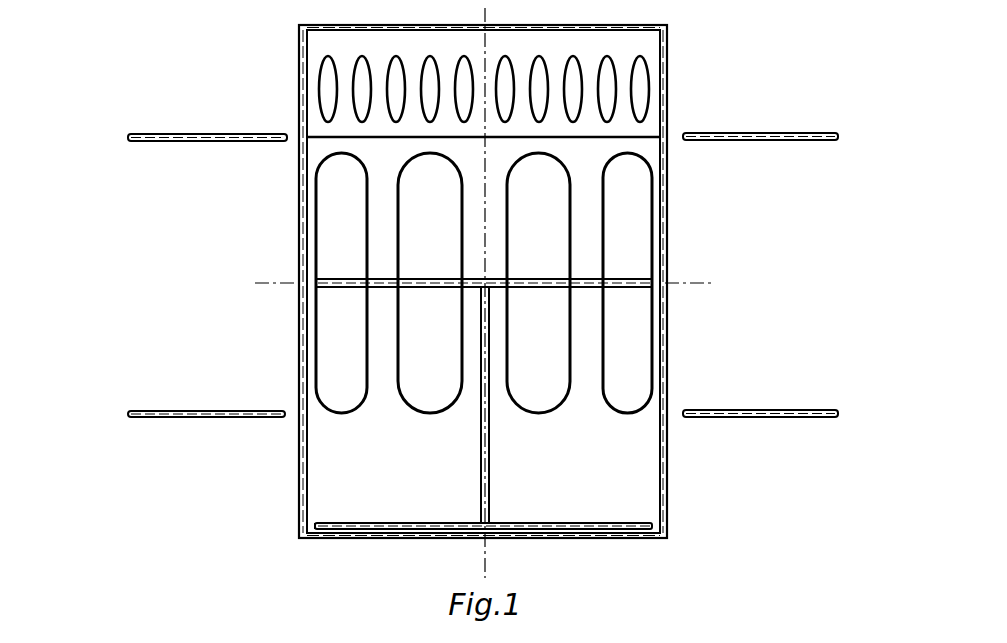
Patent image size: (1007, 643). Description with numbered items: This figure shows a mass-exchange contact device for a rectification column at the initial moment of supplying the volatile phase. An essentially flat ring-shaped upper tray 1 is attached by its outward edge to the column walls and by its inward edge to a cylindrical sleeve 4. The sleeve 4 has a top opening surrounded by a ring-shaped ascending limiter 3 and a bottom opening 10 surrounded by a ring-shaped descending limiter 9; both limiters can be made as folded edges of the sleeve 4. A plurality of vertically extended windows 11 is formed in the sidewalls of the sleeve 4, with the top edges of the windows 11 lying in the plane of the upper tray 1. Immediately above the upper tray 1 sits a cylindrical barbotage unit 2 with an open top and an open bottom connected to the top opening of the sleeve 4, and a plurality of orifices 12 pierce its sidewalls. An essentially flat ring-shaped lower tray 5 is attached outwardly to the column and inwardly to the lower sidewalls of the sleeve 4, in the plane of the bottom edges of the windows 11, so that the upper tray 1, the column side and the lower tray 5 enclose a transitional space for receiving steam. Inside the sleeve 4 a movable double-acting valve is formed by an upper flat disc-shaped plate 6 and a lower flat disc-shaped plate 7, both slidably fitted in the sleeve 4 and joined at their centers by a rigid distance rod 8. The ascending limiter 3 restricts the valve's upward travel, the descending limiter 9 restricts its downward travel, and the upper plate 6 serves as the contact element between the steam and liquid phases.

The upper tray 1 is at (135, 141).
The barbotage unit 2 is at (330, 40).
The ascending limiter 3 is at (668, 28).
The cylindrical sleeve 4 is at (390, 213).
The lower tray 5 is at (205, 413).
The upper plate 6 is at (645, 280).
The lower plate 7 is at (665, 535).
The distance rod 8 is at (488, 438).
The descending limiter 9 is at (315, 525).
The bottom opening 10 is at (322, 537).
The windows 11 is at (628, 355).
The orifices 12 is at (640, 90).